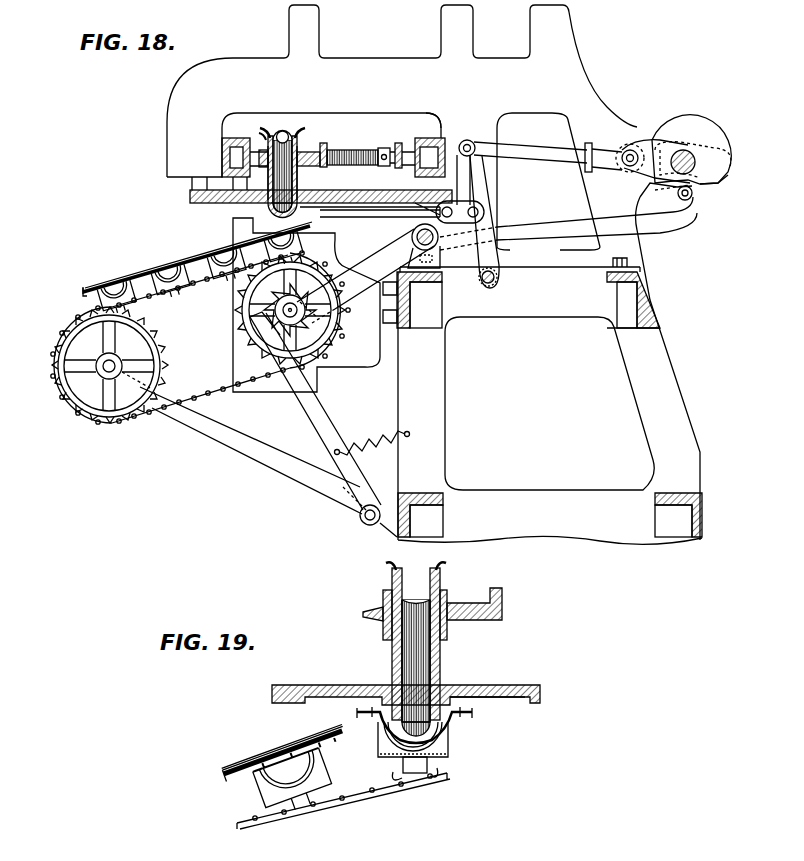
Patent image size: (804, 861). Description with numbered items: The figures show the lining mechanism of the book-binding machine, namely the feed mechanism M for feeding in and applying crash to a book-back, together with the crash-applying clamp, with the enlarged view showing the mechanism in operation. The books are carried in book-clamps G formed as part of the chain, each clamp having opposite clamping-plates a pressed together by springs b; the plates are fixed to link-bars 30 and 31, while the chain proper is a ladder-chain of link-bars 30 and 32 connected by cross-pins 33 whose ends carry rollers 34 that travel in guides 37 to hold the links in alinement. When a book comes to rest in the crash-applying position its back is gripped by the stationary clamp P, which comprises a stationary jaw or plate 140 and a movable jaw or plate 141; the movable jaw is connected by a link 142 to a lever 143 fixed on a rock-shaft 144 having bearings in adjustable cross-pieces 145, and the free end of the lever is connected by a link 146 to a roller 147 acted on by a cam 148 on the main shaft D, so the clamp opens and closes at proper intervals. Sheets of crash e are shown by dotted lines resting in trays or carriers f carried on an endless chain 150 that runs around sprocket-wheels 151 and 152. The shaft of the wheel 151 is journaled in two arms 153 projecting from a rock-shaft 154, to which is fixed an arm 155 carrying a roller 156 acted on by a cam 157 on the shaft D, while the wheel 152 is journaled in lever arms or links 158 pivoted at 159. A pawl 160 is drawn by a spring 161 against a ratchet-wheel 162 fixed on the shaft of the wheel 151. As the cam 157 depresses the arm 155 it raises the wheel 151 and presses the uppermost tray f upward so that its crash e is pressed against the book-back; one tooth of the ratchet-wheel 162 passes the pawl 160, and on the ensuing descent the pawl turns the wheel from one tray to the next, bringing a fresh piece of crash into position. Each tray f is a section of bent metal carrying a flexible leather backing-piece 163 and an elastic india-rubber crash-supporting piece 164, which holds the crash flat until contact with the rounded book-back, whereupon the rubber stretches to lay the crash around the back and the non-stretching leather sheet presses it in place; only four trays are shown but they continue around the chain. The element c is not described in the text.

In FIG. 18, the stationary jaw or plate 140 is at (188, 194).
In FIG. 19, the stationary jaw or plate 140 is at (350, 690).
In FIG. 18, the movable jaw or plate 141 is at (350, 195).
In FIG. 19, the movable jaw or plate 141 is at (487, 682).
In FIG. 18, the rollers 34 is at (333, 157).
In FIG. 18, the link-bar 30 is at (270, 143).
In FIG. 18, the clamping-plates a is at (299, 135).
In FIG. 18, the book-clamps G is at (282, 129).
In FIG. 18, the nozzle tube c is at (272, 182).
In FIG. 19, the nozzle tube c is at (400, 658).
In FIG. 18, the stationary clamp P is at (293, 173).
In FIG. 19, the stationary clamp P is at (451, 686).
In FIG. 18, the link-bar 31 is at (310, 167).
In FIG. 18, the pivotal rods or cross-pins 33 is at (343, 150).
In FIG. 18, the springs b is at (371, 149).
In FIG. 18, the link-bar 32 is at (398, 148).
In FIG. 18, the guides 37 is at (436, 137).
In FIG. 18, the link 146 is at (540, 149).
In FIG. 18, the roller 147 is at (628, 149).
In FIG. 18, the cam 148 is at (691, 149).
In FIG. 18, the main shaft D is at (700, 185).
In FIG. 18, the cam 157 is at (648, 190).
In FIG. 18, the roller 156 is at (694, 202).
In FIG. 18, the arm 155 is at (568, 223).
In FIG. 18, the lever 143 is at (478, 221).
In FIG. 18, the link 142 is at (483, 203).
In FIG. 18, the rock-shaft 144 is at (485, 284).
In FIG. 18, the adjustable cross-pieces 145 is at (589, 272).
In FIG. 18, the rock-shaft 154 is at (439, 246).
In FIG. 18, the arms 153 is at (388, 265).
In FIG. 18, the ratchet-wheel 162 is at (233, 301).
In FIG. 18, the sprocket-wheel 151 is at (233, 331).
In FIG. 18, the sprocket-wheel 152 is at (110, 365).
In FIG. 18, the endless chain 150 is at (200, 337).
In FIG. 19, the endless chain 150 is at (343, 798).
In FIG. 18, the feed mechanism M is at (197, 258).
In FIG. 18, the crash e is at (218, 250).
In FIG. 19, the crash e is at (455, 714).
In FIG. 18, the trays or carriers f is at (85, 291).
In FIG. 19, the trays or carriers f is at (448, 745).
In FIG. 18, the pawl 160 is at (323, 433).
In FIG. 18, the lever arms or links 158 is at (237, 440).
In FIG. 18, the pivot 159 is at (363, 525).
In FIG. 18, the spring 161 is at (372, 450).
In FIG. 19, the elastic crash-supporting piece 164 is at (282, 741).
In FIG. 19, the flexible backing-piece 163 is at (315, 763).